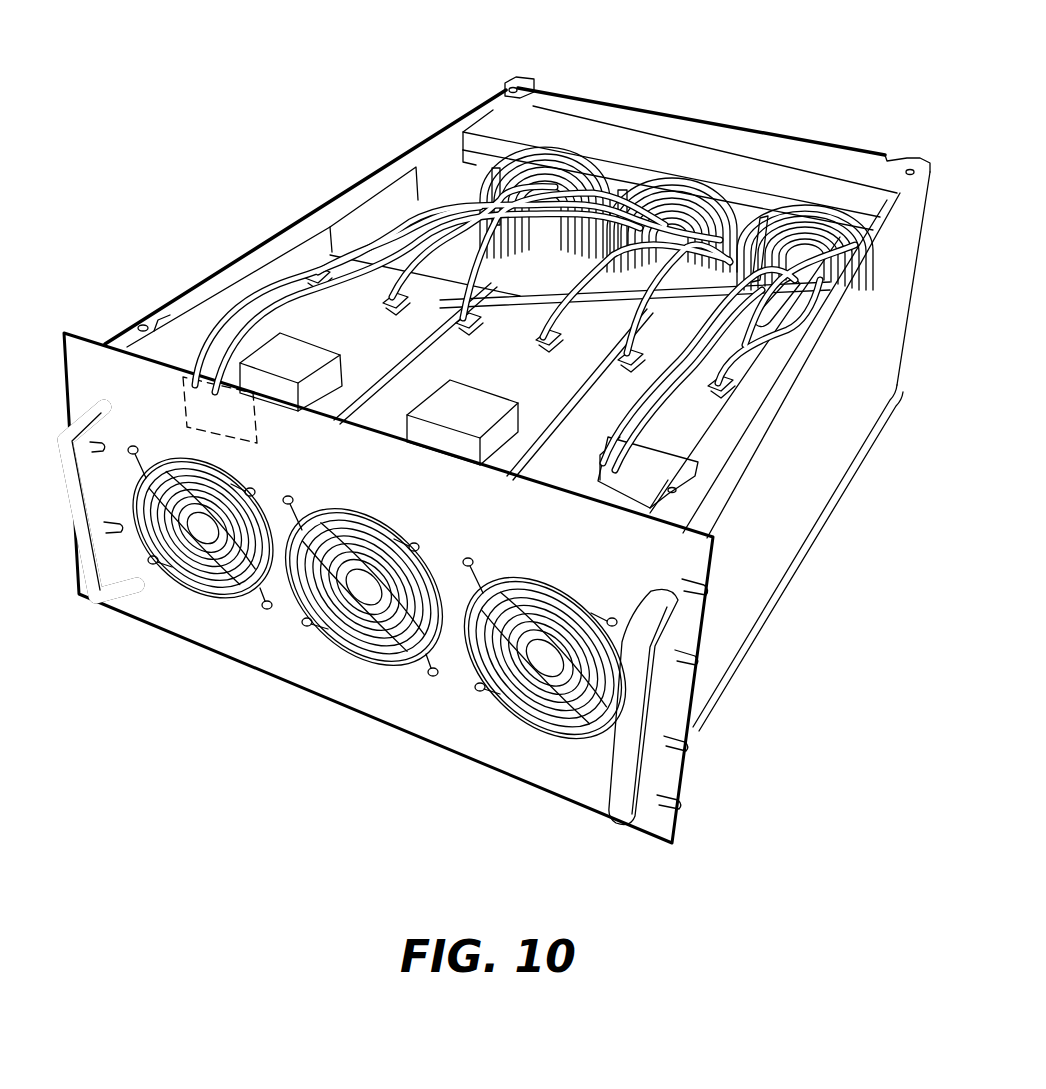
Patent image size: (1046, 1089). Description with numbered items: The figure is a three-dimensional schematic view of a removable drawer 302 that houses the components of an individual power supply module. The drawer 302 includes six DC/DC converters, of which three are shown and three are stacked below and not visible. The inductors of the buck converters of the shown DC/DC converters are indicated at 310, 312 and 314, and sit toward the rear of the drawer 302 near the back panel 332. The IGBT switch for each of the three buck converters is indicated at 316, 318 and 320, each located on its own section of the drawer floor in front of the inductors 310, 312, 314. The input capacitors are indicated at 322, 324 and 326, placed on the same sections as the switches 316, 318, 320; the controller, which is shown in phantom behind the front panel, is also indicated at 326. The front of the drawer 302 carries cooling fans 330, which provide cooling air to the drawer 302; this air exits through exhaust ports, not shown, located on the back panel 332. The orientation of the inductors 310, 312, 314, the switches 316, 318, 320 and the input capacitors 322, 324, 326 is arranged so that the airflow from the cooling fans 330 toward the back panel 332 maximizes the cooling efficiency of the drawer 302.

The removable drawer 302 is at (768, 665).
The inductor 310 is at (541, 182).
The inductor 312 is at (668, 212).
The inductor 314 is at (806, 224).
The IGBT switch 316 is at (358, 318).
The IGBT switch 318 is at (505, 362).
The IGBT switch 320 is at (696, 419).
The input capacitor 322 is at (311, 370).
The input capacitor 324 is at (484, 420).
The input capacitor / controller 326 is at (183, 402).
The cooling fans 330 is at (540, 705).
The back panel 332 is at (889, 146).